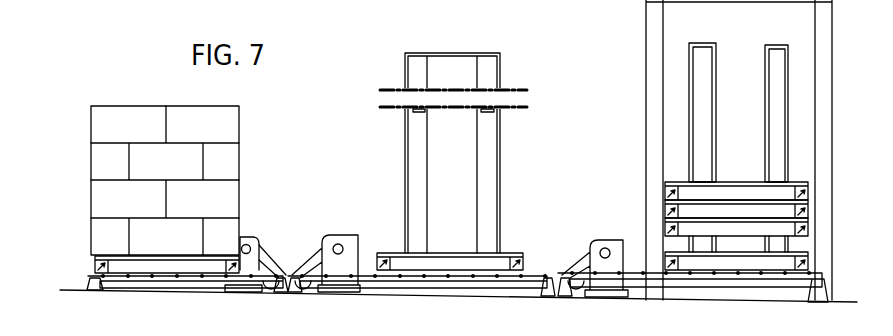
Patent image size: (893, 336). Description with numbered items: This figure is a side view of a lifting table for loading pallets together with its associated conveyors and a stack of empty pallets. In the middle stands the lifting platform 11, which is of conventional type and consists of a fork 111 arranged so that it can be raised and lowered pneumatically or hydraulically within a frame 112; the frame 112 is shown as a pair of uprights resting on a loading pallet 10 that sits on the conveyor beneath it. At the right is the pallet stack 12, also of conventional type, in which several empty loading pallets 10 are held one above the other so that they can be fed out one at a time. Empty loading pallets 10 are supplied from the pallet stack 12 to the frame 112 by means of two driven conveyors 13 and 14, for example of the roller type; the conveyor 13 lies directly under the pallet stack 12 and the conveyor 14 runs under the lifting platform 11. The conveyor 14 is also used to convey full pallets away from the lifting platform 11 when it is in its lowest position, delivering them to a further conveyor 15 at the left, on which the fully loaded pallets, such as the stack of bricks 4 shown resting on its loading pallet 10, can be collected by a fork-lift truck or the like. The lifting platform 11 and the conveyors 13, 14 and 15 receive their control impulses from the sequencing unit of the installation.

The stack of bricks 4 is at (201, 135).
The loading pallet 10 is at (97, 266).
The lifting platform 11 is at (452, 137).
The pallet stack 12 is at (633, 43).
The driven conveyor 13 is at (632, 277).
The driven conveyor 14 is at (456, 280).
The further conveyor 15 is at (183, 281).
The fork 111 is at (486, 110).
The frame 112 is at (494, 202).